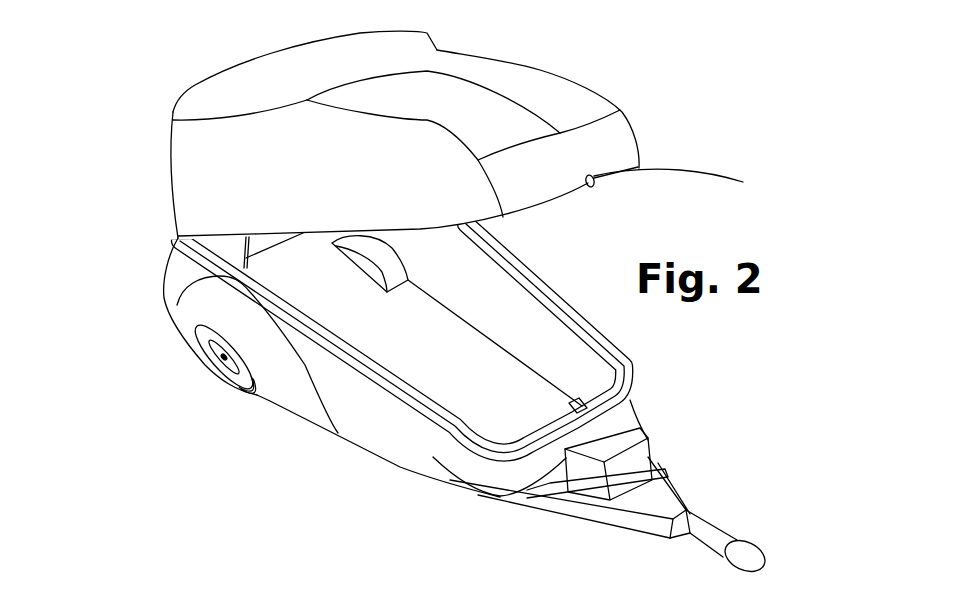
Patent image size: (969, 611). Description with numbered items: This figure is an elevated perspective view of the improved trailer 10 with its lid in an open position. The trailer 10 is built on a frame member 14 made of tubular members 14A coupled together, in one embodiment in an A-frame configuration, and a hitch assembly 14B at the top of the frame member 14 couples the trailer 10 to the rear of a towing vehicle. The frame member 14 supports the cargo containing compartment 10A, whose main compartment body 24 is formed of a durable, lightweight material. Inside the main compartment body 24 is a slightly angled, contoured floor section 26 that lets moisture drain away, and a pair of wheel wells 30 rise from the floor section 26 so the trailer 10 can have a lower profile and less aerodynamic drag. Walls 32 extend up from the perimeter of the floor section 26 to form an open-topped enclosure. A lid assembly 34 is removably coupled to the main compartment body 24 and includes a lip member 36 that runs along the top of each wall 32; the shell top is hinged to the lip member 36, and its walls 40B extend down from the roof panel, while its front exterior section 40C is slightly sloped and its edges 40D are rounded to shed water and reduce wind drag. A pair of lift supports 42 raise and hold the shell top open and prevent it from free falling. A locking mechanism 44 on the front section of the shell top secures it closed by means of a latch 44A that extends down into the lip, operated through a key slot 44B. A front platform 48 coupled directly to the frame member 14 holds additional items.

The improved trailer 10 is at (775, 100).
The cargo containing compartment 10A is at (164, 205).
The frame member 14 is at (732, 489).
The tubular members 14A is at (618, 520).
The hitch assembly 14B is at (757, 553).
The main compartment body 24 is at (560, 266).
The floor section 26 is at (487, 391).
The wheel wells 30 is at (392, 268).
The walls 32 is at (397, 439).
The lid assembly 34 is at (650, 98).
The lip member 36 is at (632, 358).
The walls 40B is at (624, 150).
The front exterior section 40C is at (520, 72).
The edges 40D is at (470, 44).
The lift supports 42 is at (249, 257).
The locking mechanism 44 is at (587, 200).
The latch 44A is at (593, 186).
The key slot 44B is at (697, 187).
The front platform 48 is at (658, 470).